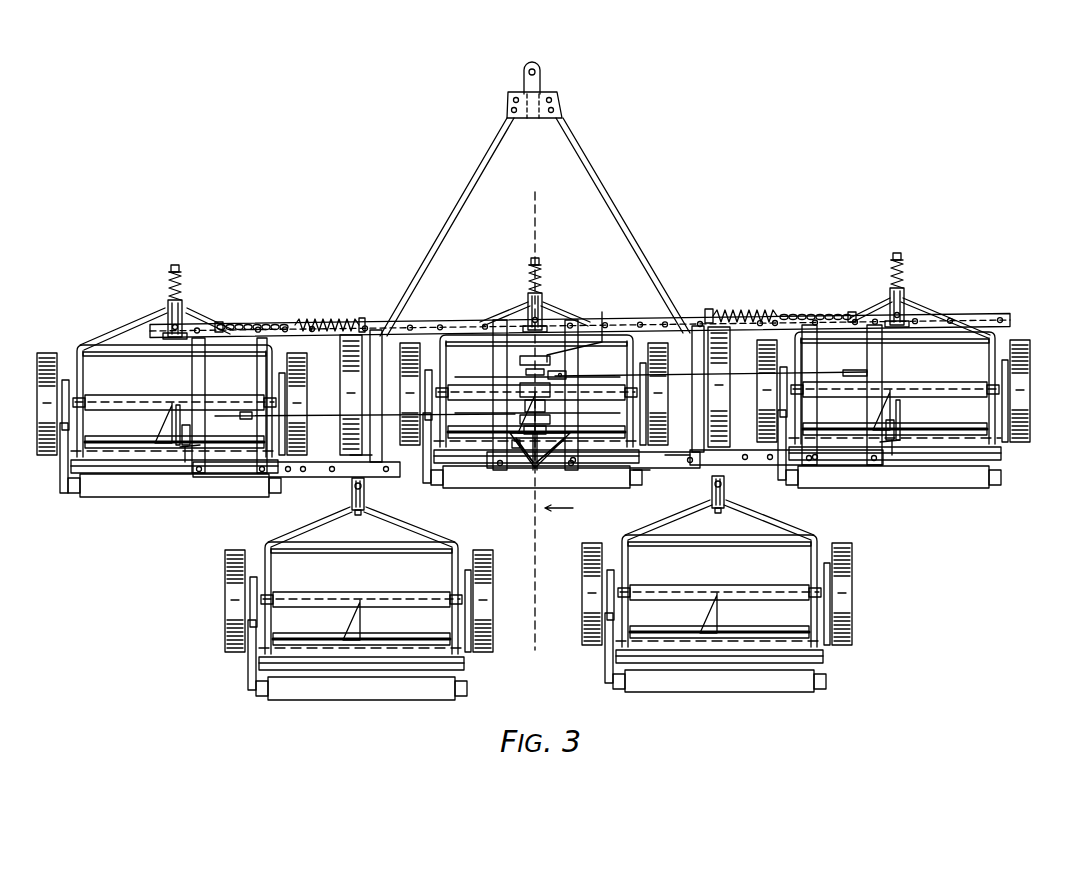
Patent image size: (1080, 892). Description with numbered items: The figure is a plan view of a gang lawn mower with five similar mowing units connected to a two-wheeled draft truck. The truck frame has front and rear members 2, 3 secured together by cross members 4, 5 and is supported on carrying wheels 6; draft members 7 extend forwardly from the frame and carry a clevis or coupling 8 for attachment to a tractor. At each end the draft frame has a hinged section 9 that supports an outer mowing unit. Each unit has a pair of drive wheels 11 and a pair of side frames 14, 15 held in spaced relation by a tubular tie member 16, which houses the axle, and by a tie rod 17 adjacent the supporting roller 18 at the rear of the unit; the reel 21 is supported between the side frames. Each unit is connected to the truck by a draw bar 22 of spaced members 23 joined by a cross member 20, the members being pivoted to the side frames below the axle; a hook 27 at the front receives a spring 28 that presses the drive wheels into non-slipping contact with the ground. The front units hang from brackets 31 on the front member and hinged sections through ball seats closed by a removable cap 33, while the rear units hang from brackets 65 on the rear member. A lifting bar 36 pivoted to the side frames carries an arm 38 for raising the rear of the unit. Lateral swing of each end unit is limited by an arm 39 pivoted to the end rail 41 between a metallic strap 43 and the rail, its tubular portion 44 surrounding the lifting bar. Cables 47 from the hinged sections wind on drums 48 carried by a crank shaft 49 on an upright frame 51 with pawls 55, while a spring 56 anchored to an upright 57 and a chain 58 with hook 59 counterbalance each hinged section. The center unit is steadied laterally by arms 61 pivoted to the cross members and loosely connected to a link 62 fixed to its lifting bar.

The front member 2 is at (672, 340).
The rear member 3 is at (655, 470).
The cross member 4 is at (378, 350).
The cross member 5 is at (500, 377).
The carrying wheel 6 is at (368, 458).
The draft member 7 is at (594, 186).
The clevis 8 is at (540, 78).
The hinged section 9 is at (244, 320).
The drive wheel 11 is at (45, 408).
The side frame 14 is at (60, 455).
The side frame 15 is at (280, 390).
The tubular tie member 16 is at (120, 402).
The tie rod 17 is at (128, 470).
The supporting roller 18 is at (180, 490).
The cross member 20 is at (122, 357).
The reel 21 is at (105, 450).
The draw bar 22 is at (125, 311).
The spaced apart member 23 is at (198, 308).
The hook 27 is at (177, 268).
The spring 28 is at (170, 282).
The bracket 31 is at (168, 323).
The removable cap 33 is at (522, 430).
The lifting bar 36 is at (140, 440).
The arm 38 is at (178, 428).
The arm 39 is at (190, 445).
The end rail 41 is at (205, 380).
The metallic strap 43 is at (185, 465).
The tubular portion 44 is at (180, 455).
The cable 47 is at (348, 410).
The winding drum 48 is at (520, 389).
The crank shaft 49 is at (520, 358).
The upright frame 51 is at (512, 448).
The pawl 55 is at (566, 375).
The spring 56 is at (330, 322).
The upright 57 is at (372, 330).
The chain 58 is at (262, 322).
The hook 59 is at (222, 322).
The arm 61 is at (520, 462).
The link 62 is at (535, 470).
The bracket 65 is at (368, 493).